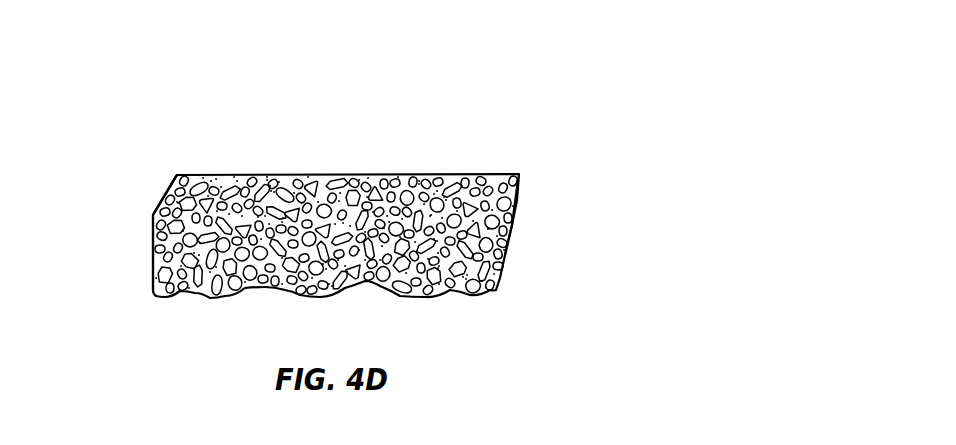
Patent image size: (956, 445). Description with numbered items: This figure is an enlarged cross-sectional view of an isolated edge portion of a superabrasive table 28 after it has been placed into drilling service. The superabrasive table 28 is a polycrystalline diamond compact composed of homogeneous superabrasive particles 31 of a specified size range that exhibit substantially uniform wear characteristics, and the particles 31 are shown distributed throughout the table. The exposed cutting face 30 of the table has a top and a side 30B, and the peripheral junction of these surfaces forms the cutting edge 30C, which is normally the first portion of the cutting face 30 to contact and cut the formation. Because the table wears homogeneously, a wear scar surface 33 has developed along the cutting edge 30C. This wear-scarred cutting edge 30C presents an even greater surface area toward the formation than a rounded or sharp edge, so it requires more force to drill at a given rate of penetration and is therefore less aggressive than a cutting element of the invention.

The superabrasive table 28 is at (551, 252).
The cutting face 30 is at (370, 168).
The side 30B is at (141, 222).
The cutting edge 30C is at (139, 202).
The superabrasive particles 31 is at (352, 177).
The wear scar surface 33 is at (167, 182).